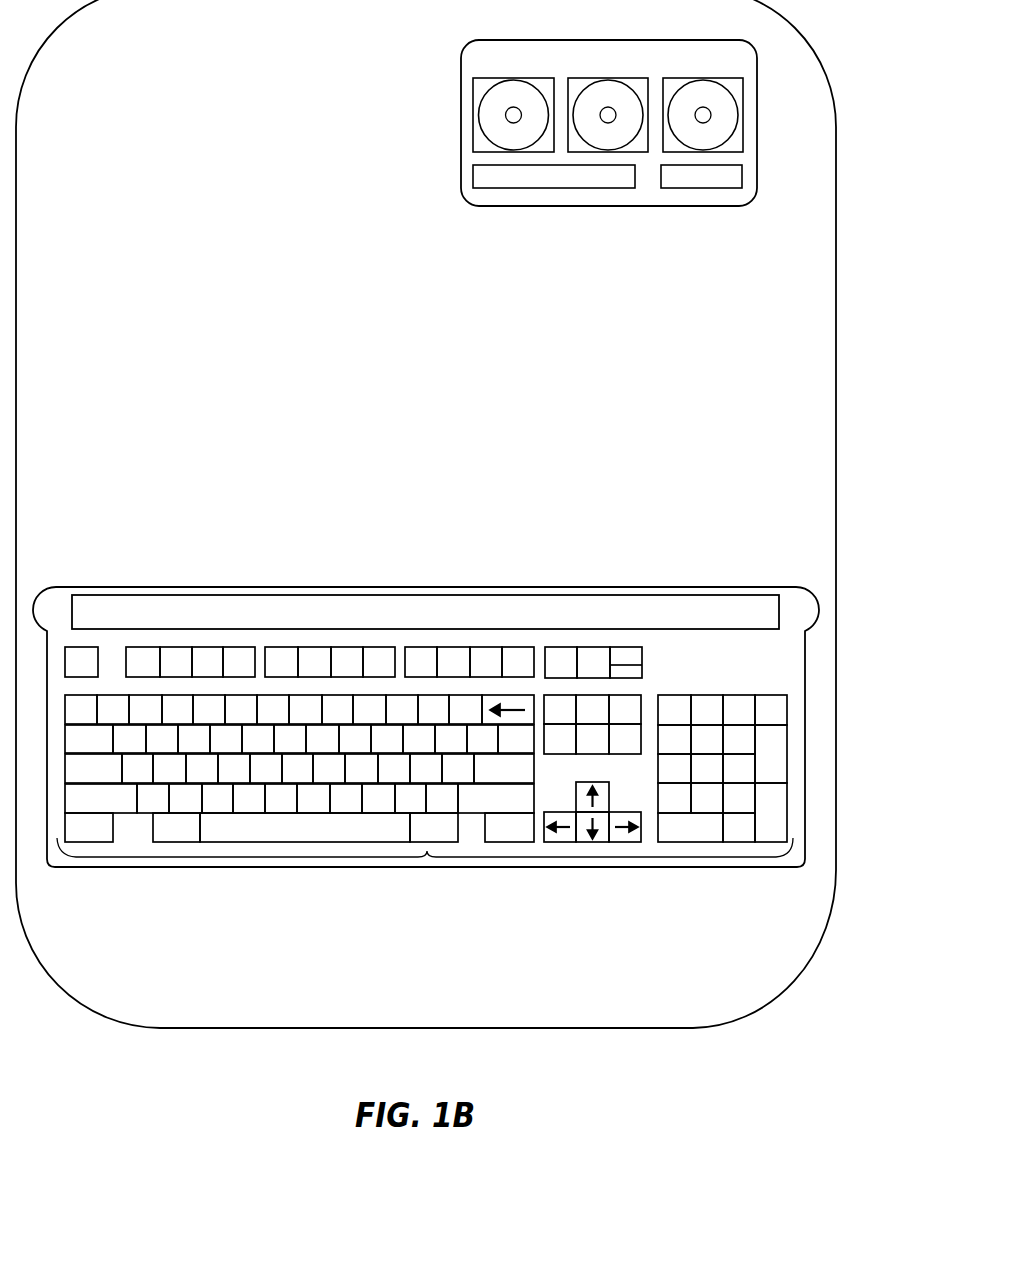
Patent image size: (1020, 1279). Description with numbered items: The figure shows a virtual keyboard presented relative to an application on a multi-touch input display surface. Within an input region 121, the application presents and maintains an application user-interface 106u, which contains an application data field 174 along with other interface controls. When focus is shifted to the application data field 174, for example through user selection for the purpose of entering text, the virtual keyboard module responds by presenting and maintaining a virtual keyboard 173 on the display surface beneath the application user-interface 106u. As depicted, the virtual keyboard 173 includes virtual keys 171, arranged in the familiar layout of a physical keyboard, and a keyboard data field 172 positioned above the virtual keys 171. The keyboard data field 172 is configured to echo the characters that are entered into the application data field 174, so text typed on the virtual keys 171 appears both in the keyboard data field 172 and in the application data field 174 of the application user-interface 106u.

The input region 121 is at (672, 1030).
The application user-interface 106u is at (461, 123).
The application data field 174 is at (557, 188).
The virtual keyboard 173 is at (808, 687).
The keyboard data field 172 is at (228, 598).
The virtual keys 171 is at (427, 853).